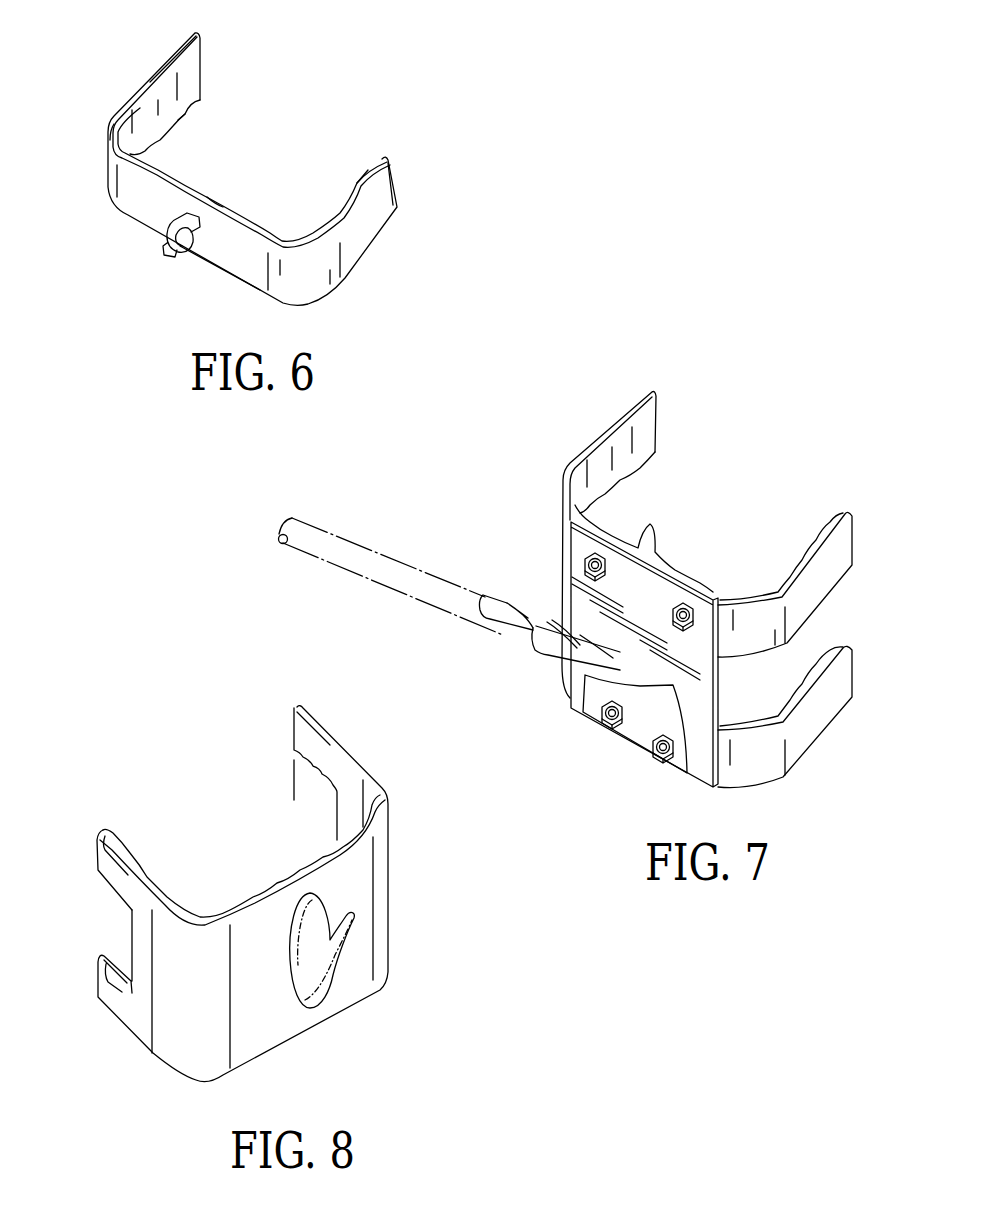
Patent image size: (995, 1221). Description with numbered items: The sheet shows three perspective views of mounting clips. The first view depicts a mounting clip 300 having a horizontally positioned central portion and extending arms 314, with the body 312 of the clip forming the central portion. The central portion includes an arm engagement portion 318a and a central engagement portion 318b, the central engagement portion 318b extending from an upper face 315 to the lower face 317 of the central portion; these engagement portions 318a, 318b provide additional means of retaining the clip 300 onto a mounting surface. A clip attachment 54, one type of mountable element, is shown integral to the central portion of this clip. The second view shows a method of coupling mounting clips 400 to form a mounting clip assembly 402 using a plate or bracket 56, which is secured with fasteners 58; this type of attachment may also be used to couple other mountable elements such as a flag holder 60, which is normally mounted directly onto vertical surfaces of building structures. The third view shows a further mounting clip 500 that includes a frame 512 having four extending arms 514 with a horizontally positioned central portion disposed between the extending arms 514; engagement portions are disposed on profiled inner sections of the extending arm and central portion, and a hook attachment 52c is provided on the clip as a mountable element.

In FIG. 6, the mounting clip 300 is at (265, 171).
In FIG. 6, the band body 312 is at (122, 212).
In FIG. 6, the extending arms 314 is at (168, 58).
In FIG. 6, the upper face 315 is at (155, 152).
In FIG. 6, the lower face 317 is at (218, 268).
In FIG. 6, the arm engagement portion 318a is at (190, 78).
In FIG. 6, the central engagement portion 318b is at (228, 207).
In FIG. 6, the clip attachment 54 is at (170, 250).
In FIG. 7, the mounting clips 400 is at (617, 413).
In FIG. 7, the mounting clip assembly 402 is at (574, 580).
In FIG. 7, the plate or bracket 56 is at (601, 591).
In FIG. 7, the fasteners 58 is at (685, 603).
In FIG. 7, the flag holder 60 is at (517, 600).
In FIG. 8, the mounting clip 500 is at (258, 905).
In FIG. 8, the frame 512 is at (155, 1075).
In FIG. 8, the extending arms 514 is at (296, 740).
In FIG. 8, the hook attachment 52c is at (345, 945).